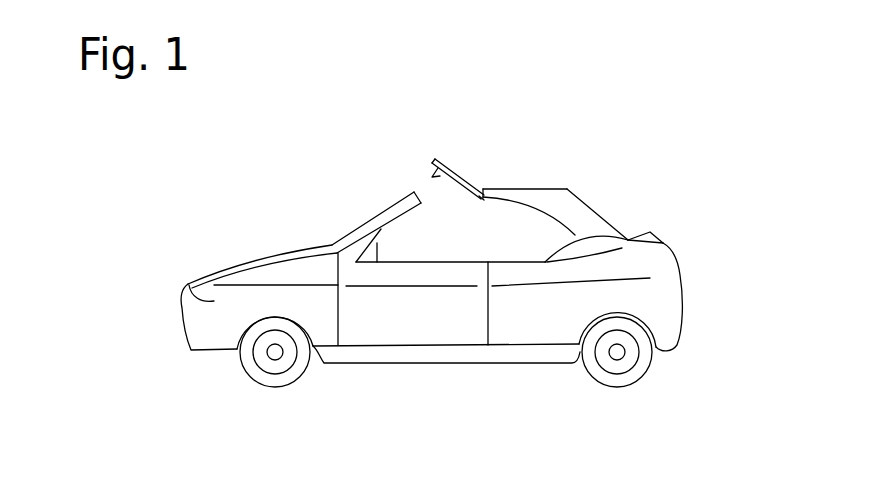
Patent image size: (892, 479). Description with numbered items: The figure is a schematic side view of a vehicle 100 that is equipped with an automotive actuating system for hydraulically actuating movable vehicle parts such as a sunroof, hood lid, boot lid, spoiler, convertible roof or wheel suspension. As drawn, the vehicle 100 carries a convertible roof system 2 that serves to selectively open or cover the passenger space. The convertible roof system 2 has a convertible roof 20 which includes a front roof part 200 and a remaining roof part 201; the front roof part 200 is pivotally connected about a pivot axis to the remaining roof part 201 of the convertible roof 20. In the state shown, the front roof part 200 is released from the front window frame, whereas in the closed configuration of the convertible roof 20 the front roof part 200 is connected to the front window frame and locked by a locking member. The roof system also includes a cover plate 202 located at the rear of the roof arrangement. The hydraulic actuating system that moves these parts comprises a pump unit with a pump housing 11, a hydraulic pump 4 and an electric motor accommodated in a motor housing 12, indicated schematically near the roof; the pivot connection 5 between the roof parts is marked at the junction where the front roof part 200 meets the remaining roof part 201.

The vehicle 100 is at (294, 247).
The pump housing 11 is at (418, 192).
The motor housing 12 is at (421, 160).
The roof part 200 is at (481, 190).
The hydraulic pump 4 is at (483, 189).
The pivot joint 5 is at (481, 197).
The convertible roof 20 is at (542, 176).
The convertible roof system 2 is at (573, 178).
The remaining roof part 201 is at (580, 213).
The cover plate 202 is at (661, 241).